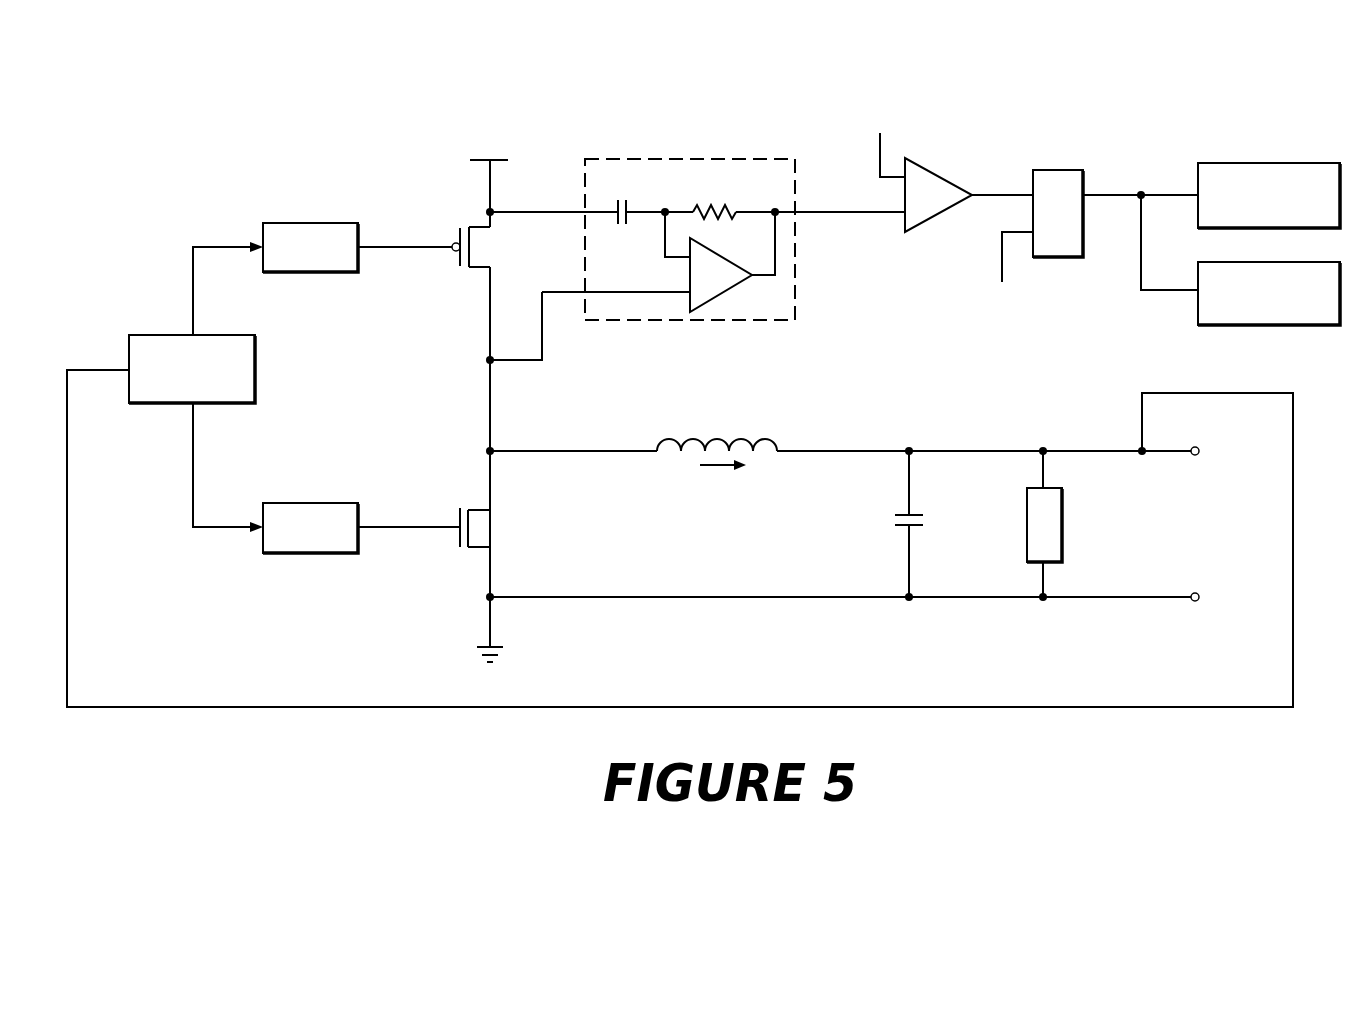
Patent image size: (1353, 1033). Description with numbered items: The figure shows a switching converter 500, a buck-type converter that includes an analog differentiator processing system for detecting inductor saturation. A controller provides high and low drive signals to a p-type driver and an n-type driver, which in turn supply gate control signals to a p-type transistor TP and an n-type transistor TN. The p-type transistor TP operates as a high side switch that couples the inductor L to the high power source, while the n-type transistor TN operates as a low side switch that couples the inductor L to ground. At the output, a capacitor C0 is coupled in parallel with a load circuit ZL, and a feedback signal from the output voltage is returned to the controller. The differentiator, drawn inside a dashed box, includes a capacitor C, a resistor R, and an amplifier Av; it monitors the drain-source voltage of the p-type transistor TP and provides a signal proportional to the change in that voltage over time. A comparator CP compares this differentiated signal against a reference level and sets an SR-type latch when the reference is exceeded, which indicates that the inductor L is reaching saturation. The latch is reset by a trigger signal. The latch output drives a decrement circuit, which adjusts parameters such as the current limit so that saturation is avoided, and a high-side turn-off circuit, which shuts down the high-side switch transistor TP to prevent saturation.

The switching converter 500 is at (149, 156).
The p-type transistor TP is at (485, 247).
The n-type transistor TN is at (490, 527).
The capacitor C is at (621, 200).
The resistor R is at (714, 200).
The amplifier Av is at (721, 275).
The comparator CP is at (938, 195).
The inductor L is at (717, 431).
The capacitor C0 is at (929, 528).
The load circuit ZL is at (1065, 525).